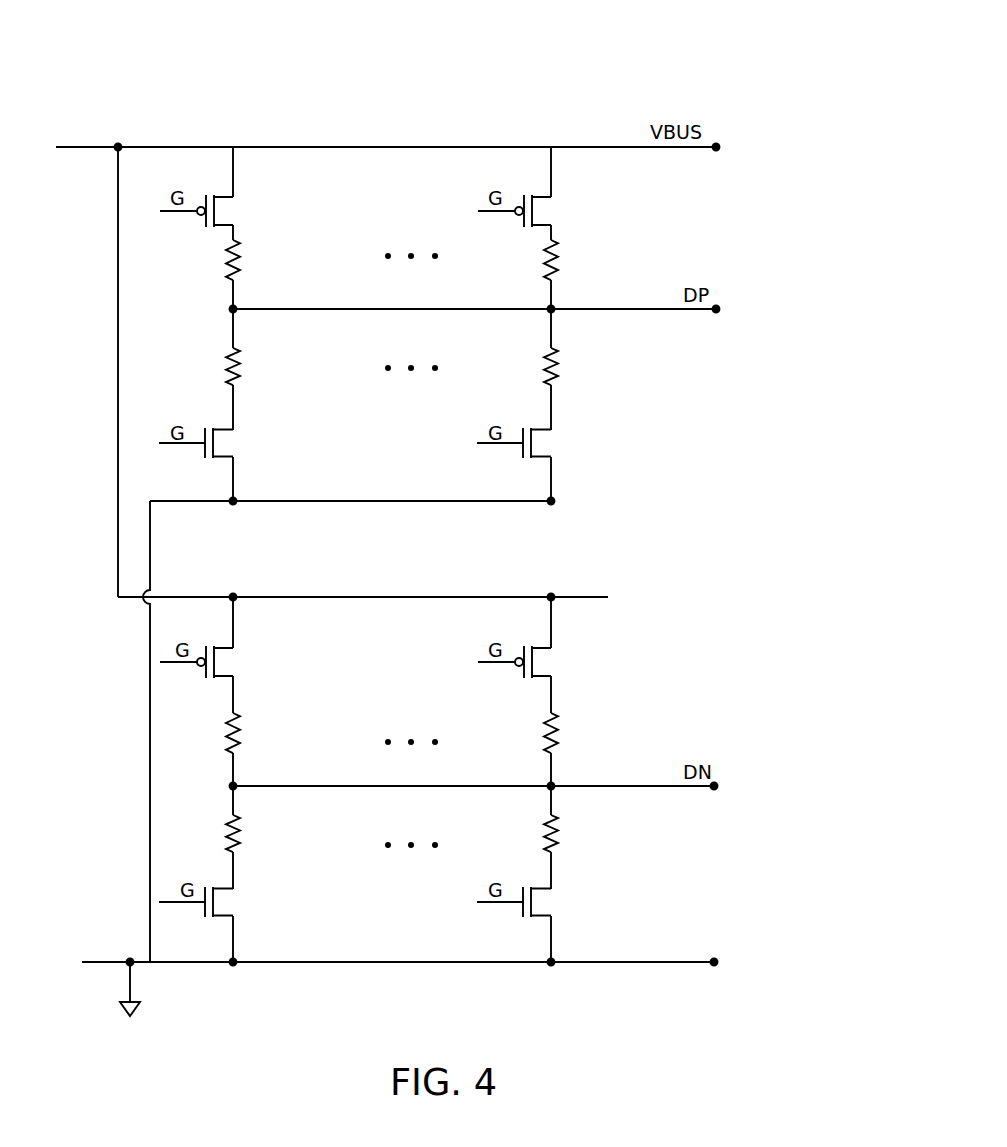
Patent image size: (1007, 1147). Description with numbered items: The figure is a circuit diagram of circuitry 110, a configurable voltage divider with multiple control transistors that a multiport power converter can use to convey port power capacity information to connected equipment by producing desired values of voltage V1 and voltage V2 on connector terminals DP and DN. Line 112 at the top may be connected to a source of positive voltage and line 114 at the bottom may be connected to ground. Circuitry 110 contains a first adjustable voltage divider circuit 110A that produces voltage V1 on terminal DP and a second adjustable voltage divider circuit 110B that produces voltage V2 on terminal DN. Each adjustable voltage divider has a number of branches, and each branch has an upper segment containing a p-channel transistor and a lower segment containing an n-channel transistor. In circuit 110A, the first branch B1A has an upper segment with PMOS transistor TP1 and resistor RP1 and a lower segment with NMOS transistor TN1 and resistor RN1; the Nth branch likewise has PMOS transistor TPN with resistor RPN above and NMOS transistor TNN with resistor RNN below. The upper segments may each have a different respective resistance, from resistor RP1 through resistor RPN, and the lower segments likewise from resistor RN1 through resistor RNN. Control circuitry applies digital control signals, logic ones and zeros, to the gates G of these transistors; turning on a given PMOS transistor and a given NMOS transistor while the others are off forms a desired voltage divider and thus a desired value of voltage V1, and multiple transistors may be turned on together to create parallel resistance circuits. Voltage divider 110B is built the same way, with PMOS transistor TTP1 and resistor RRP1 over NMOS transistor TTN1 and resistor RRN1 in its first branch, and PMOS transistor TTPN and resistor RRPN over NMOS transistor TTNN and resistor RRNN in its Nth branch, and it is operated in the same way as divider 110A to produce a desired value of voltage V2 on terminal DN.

The circuitry 110 is at (512, 60).
The first adjustable voltage divider circuit 110A is at (762, 142).
The second adjustable voltage divider circuit 110B is at (762, 593).
The line 112 is at (85, 146).
The line 114 is at (115, 960).
The first branch B1A is at (307, 197).
The PMOS transistor TP1 is at (218, 211).
The PMOS transistor TPN is at (537, 211).
The resistor RP1 is at (255, 260).
The resistor RPN is at (574, 260).
The resistor RN1 is at (256, 366).
The resistor RNN is at (575, 366).
The NMOS transistor TN1 is at (219, 443).
The NMOS transistor TNN is at (538, 443).
The voltage V1 is at (219, 308).
The voltage V2 is at (219, 785).
The PMOS transistor TTP1 is at (224, 662).
The PMOS transistor TTPN is at (543, 662).
The resistor RRP1 is at (261, 733).
The resistor RRPN is at (580, 733).
The resistor RRN1 is at (263, 833).
The resistor RRNN is at (582, 833).
The NMOS transistor TTN1 is at (225, 902).
The NMOS transistor TTNN is at (544, 902).